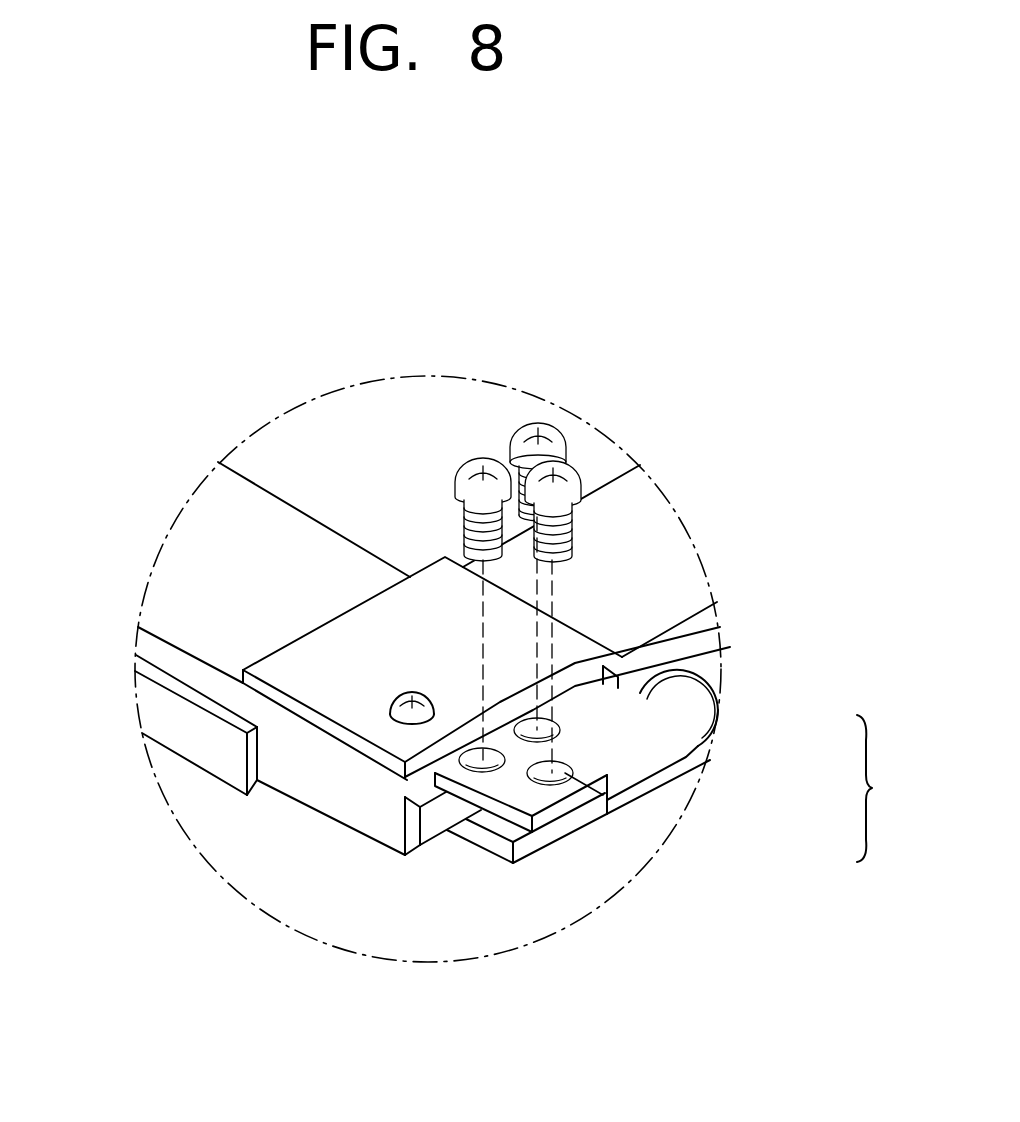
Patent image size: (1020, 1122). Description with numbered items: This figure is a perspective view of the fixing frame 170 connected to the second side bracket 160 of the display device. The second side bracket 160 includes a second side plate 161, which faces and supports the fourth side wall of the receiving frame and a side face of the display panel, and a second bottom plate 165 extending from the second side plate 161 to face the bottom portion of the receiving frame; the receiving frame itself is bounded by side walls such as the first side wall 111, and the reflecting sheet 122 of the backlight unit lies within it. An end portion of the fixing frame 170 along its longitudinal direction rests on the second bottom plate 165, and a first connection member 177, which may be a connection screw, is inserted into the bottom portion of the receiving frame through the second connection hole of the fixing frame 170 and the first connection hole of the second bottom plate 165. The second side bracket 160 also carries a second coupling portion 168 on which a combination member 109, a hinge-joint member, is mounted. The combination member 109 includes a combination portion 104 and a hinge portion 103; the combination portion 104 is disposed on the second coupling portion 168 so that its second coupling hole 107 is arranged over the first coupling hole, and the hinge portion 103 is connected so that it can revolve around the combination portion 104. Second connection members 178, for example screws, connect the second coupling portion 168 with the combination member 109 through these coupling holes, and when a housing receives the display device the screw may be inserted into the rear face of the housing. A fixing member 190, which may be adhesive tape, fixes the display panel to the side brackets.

The hinge portion 103 is at (723, 684).
The combination portion 104 is at (603, 800).
The second coupling hole 107 is at (560, 750).
The combination member 109 is at (891, 788).
The first side wall 111 is at (703, 640).
The reflecting sheet 122 is at (419, 457).
The second side bracket 160 is at (146, 960).
The second side plate 161 is at (323, 777).
The second bottom plate 165 is at (235, 642).
The second coupling portion 168 is at (530, 845).
The fixing frame 170 is at (668, 538).
The first connection member 177 is at (395, 728).
The second connection member 178 is at (557, 427).
The fixing member 190 is at (143, 698).